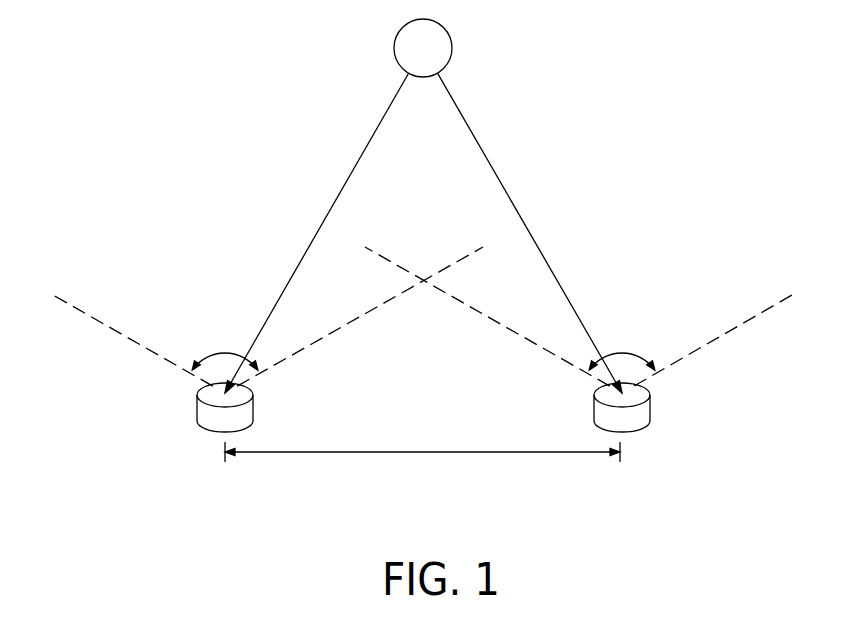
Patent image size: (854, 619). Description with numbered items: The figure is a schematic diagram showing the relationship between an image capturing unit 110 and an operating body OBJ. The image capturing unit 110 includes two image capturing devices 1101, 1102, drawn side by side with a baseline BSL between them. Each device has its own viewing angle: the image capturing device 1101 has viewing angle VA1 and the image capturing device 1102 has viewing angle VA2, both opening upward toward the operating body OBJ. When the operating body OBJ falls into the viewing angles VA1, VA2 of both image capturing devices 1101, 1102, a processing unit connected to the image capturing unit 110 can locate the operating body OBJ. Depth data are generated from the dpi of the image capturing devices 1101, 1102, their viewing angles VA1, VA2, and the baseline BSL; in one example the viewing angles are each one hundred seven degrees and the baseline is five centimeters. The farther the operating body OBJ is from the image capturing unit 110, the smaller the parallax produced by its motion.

The image capturing unit 110 is at (422, 290).
The image capturing device 1101 is at (210, 420).
The image capturing device 1102 is at (637, 418).
The operating body OBJ is at (452, 48).
The viewing angle VA1 is at (268, 316).
The viewing angle VA2 is at (578, 316).
The baseline BSL is at (422, 441).